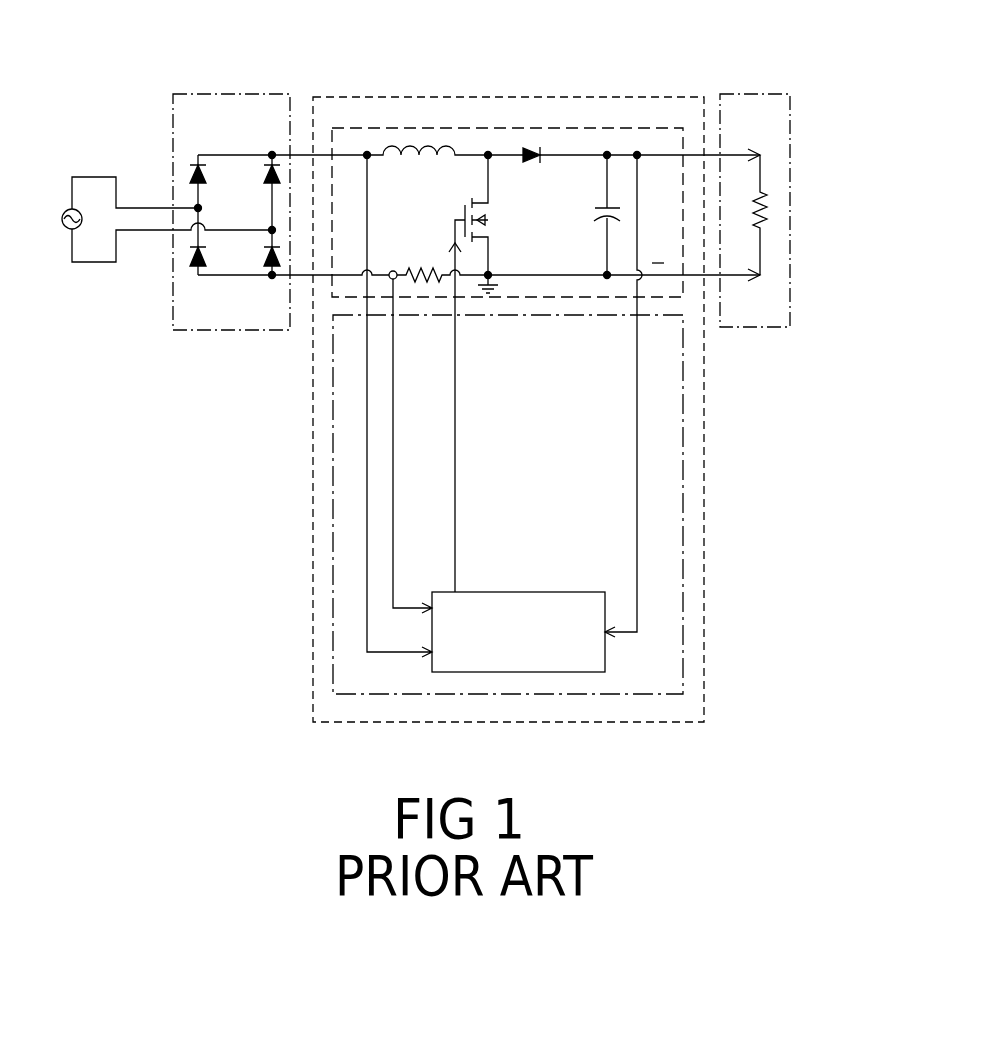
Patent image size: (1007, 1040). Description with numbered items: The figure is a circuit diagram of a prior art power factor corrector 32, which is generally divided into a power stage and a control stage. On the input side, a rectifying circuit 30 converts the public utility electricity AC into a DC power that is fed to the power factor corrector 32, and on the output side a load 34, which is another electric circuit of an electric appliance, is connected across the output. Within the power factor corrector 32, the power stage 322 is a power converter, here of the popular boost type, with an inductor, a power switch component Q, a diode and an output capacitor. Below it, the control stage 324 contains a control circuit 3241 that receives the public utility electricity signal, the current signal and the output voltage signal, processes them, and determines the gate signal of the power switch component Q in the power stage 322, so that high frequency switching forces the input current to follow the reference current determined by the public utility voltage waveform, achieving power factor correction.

The rectifying circuit 30 is at (235, 94).
The power factor corrector 32 is at (516, 396).
The power stage 322 is at (642, 128).
The control stage 324 is at (513, 471).
The control circuit 3241 is at (530, 592).
The load 34 is at (781, 94).